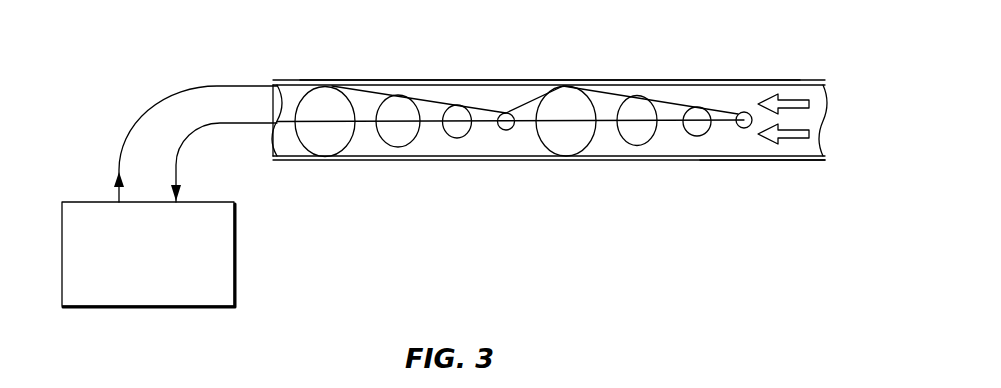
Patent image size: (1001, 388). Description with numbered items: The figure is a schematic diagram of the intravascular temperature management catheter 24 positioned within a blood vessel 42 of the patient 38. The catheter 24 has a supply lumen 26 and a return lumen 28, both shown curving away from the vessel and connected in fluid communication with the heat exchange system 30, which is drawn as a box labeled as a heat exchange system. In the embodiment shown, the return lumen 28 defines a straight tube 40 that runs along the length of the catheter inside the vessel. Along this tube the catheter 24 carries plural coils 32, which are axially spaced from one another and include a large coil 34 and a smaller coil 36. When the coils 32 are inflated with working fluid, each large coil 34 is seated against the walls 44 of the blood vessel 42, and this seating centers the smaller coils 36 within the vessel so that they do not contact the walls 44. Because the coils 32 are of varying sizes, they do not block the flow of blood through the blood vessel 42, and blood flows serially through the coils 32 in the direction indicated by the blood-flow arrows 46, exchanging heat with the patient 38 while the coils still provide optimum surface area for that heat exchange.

The intravascular temperature management catheter 24 is at (660, 50).
The supply lumen 26 is at (136, 125).
The return lumen 28 is at (185, 148).
The heat exchange system 30 is at (148, 308).
The plural coils 32 is at (766, 203).
The large coil 34 is at (348, 145).
The smaller coil 36 is at (410, 144).
The patient 38 is at (728, 80).
The straight tube 40 is at (725, 121).
The blood vessel 42 is at (288, 148).
The walls of the blood vessel 44 is at (784, 160).
The blood-flow arrows 46 is at (797, 100).